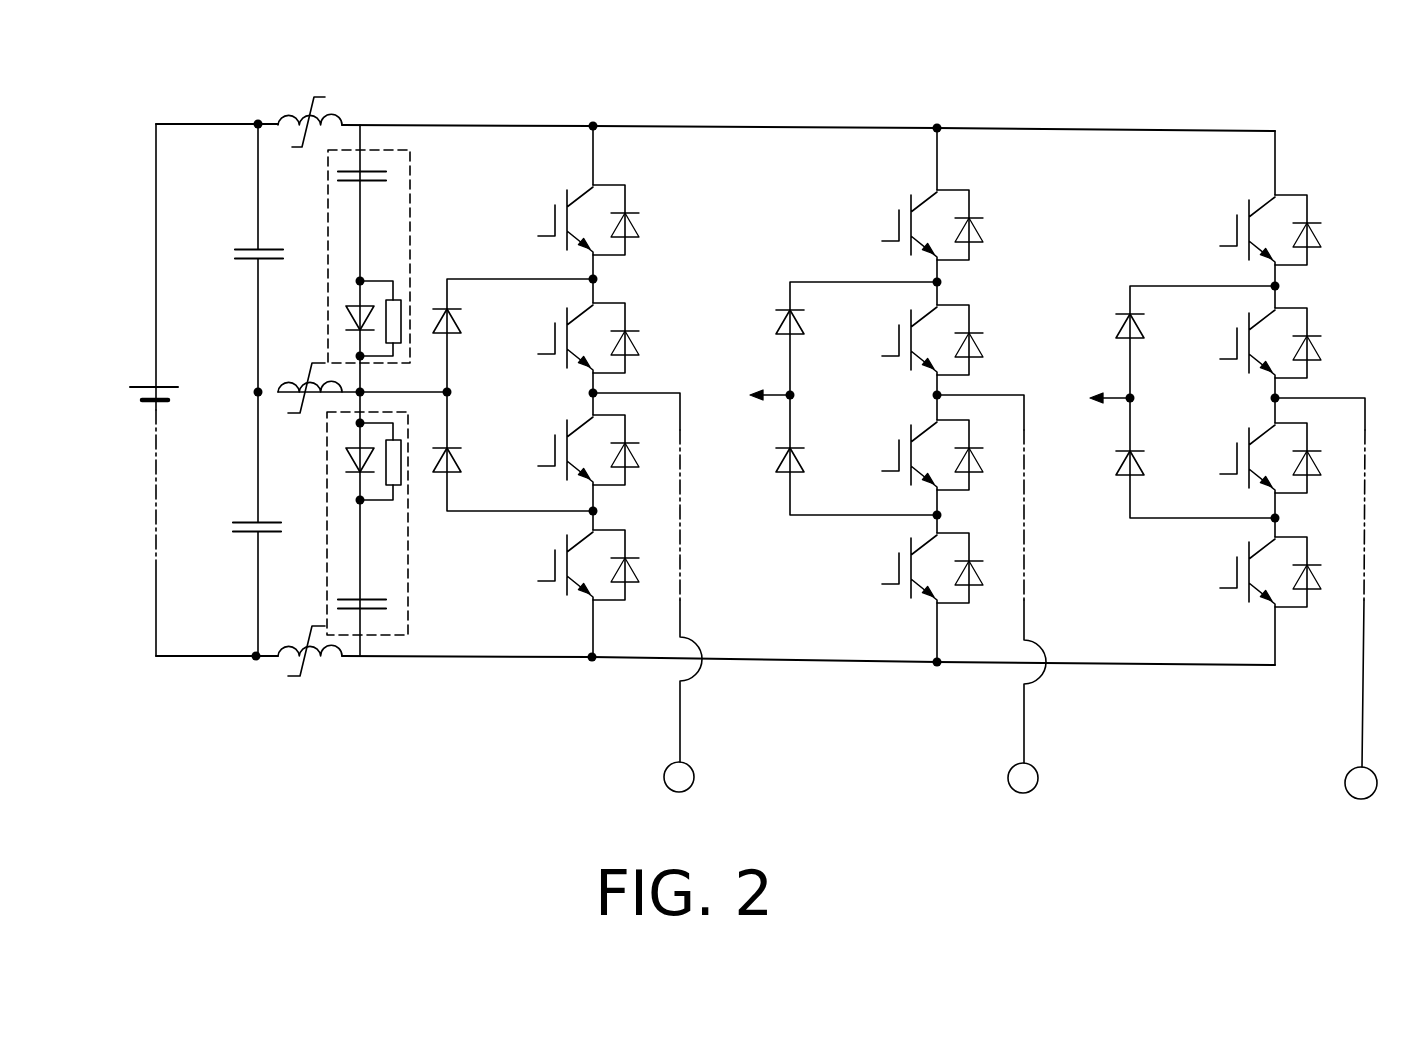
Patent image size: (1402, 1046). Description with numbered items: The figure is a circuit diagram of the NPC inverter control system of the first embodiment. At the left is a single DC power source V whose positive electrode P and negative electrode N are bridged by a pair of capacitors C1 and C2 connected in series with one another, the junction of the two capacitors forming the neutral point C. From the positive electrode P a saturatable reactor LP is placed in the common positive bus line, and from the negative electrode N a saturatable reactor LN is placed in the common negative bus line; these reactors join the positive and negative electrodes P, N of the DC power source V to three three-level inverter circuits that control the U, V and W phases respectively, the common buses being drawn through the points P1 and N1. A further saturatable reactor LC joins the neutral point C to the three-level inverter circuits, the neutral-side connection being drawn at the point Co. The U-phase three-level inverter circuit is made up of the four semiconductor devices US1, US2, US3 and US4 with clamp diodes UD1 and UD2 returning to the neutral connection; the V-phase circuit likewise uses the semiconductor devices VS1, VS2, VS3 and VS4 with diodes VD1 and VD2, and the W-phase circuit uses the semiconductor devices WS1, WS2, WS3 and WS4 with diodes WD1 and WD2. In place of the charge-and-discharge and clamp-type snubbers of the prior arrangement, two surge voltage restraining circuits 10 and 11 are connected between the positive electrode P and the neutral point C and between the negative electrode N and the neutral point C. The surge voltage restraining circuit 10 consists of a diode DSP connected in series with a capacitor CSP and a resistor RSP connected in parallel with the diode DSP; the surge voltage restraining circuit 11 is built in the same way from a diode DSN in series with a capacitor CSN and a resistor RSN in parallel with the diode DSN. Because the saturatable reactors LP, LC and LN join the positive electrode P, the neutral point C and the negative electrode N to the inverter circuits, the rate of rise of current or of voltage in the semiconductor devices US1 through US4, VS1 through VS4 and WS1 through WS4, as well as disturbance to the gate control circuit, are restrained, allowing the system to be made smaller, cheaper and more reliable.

The surge voltage restraining circuit 10 is at (392, 150).
The surge voltage restraining circuit 11 is at (405, 633).
The DC power source V is at (140, 398).
The capacitor C1 is at (236, 258).
The capacitor C2 is at (234, 524).
The positive electrode P is at (245, 140).
The neutral point C is at (244, 394).
The negative electrode N is at (241, 642).
The saturatable reactor LP is at (310, 104).
The saturatable reactor LC is at (310, 410).
The saturatable reactor LN is at (310, 677).
The capacitor CSP is at (392, 181).
The resistor RSP is at (394, 296).
The diode DSP is at (329, 317).
The capacitor CSN is at (394, 613).
The resistor RSN is at (396, 490).
The diode DSN is at (329, 473).
The snubber output connection point Co is at (745, 383).
The U-phase upper clamp diode UD1 is at (506, 321).
The U-phase lower clamp diode UD2 is at (507, 472).
The semiconductor device US1 is at (565, 232).
The semiconductor device US2 is at (565, 347).
The semiconductor device US3 is at (565, 461).
The semiconductor device US4 is at (565, 564).
The positive bus connection point P1 is at (615, 110).
The negative bus connection point N1 is at (585, 681).
The V-phase upper clamp diode VD1 is at (849, 321).
The V-phase lower clamp diode VD2 is at (847, 475).
The semiconductor device VS1 is at (909, 205).
The semiconductor device VS2 is at (908, 350).
The semiconductor device VS3 is at (909, 463).
The semiconductor device VS4 is at (909, 599).
The W-phase upper clamp diode WD1 is at (1185, 324).
The W-phase lower clamp diode WD2 is at (1178, 478).
The semiconductor device WS1 is at (1245, 239).
The semiconductor device WS2 is at (1244, 353).
The semiconductor device WS3 is at (1243, 467).
The semiconductor device WS4 is at (1244, 571).